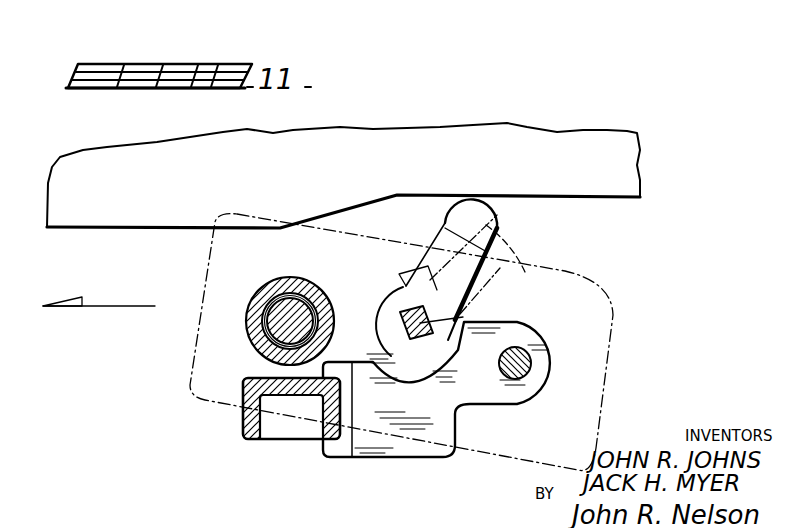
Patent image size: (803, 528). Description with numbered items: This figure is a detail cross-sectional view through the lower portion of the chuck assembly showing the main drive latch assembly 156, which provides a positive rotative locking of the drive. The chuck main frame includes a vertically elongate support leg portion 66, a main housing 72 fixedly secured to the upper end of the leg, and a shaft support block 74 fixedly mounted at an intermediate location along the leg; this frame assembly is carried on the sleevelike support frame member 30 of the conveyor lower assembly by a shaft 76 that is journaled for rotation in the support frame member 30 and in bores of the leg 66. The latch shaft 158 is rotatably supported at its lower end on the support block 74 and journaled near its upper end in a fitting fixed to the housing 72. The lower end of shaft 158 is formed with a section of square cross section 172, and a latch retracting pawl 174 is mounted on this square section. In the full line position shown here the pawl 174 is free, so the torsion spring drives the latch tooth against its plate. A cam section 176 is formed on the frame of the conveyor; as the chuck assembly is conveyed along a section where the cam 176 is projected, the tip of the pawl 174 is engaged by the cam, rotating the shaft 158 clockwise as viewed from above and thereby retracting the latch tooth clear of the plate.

The cam section 176 is at (130, 218).
The latch retracting pawl 174 is at (489, 222).
The main drive latch assembly 156 is at (490, 278).
The shaft 158 is at (463, 317).
The main housing 72 is at (620, 327).
The section of square cross section 172 is at (410, 306).
The shaft 76 is at (278, 318).
The sleevelike support frame member 30 is at (260, 346).
The support leg portion 66 is at (250, 433).
The shaft support block 74 is at (502, 392).